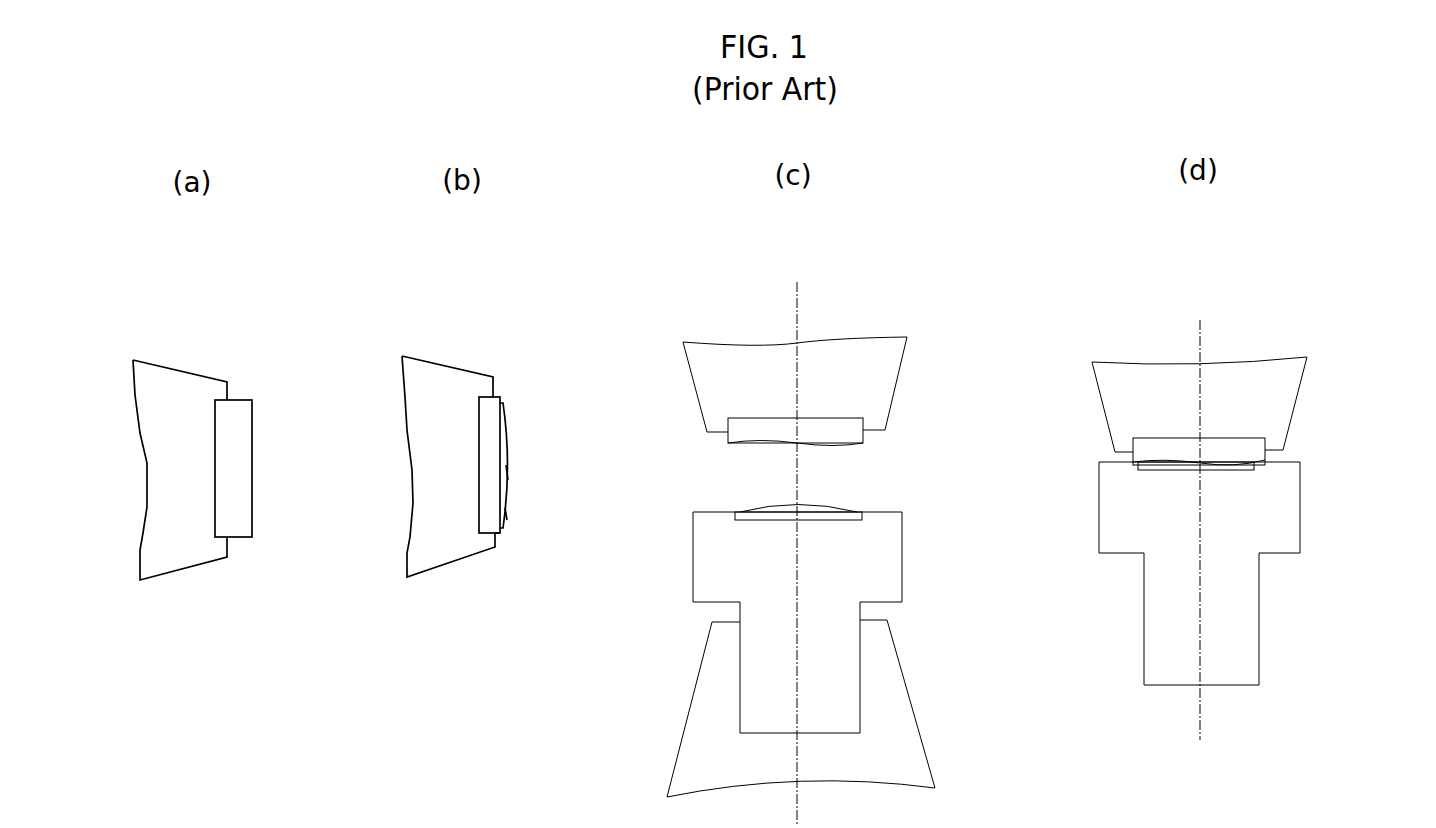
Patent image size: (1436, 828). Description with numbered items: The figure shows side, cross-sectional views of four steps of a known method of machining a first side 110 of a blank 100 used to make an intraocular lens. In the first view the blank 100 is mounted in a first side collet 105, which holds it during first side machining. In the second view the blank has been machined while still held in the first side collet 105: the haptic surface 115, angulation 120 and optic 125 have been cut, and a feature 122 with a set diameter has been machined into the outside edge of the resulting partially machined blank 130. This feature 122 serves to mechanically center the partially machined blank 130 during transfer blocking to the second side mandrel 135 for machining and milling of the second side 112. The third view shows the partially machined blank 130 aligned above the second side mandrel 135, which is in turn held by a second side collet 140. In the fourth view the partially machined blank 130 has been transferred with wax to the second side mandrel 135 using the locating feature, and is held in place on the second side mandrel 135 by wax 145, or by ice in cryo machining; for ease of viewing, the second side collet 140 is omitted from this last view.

The blank 100 is at (243, 413).
The first side collet 105 is at (162, 382).
The first side 110 is at (255, 520).
The second side 112 is at (1245, 434).
The haptic surface 115 is at (507, 417).
The angulation 120 is at (507, 515).
The feature 122 is at (500, 532).
The optic 125 is at (508, 475).
The partially machined blank 130 is at (490, 445).
The second side mandrel 135 is at (887, 578).
The second side collet 140 is at (878, 678).
The wax 145 is at (808, 512).